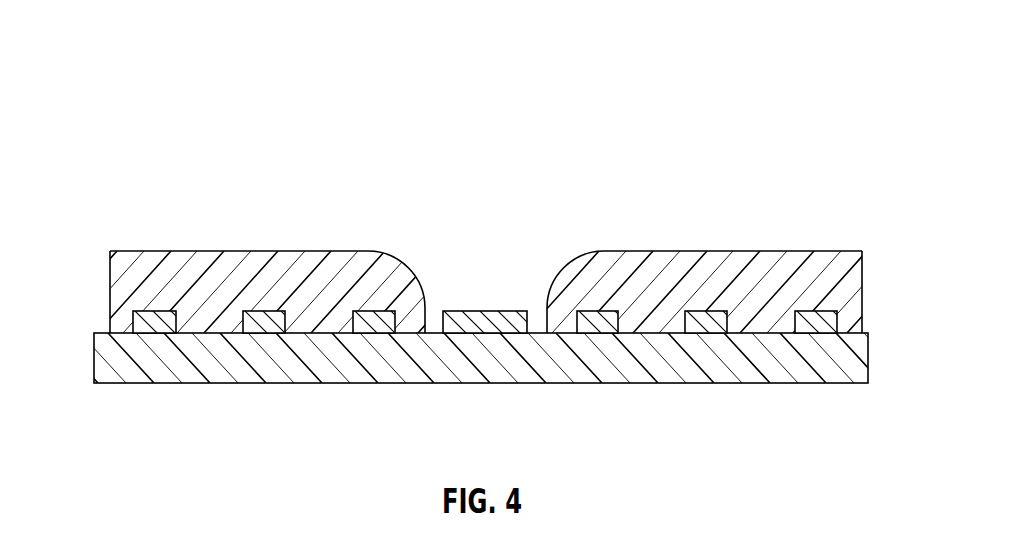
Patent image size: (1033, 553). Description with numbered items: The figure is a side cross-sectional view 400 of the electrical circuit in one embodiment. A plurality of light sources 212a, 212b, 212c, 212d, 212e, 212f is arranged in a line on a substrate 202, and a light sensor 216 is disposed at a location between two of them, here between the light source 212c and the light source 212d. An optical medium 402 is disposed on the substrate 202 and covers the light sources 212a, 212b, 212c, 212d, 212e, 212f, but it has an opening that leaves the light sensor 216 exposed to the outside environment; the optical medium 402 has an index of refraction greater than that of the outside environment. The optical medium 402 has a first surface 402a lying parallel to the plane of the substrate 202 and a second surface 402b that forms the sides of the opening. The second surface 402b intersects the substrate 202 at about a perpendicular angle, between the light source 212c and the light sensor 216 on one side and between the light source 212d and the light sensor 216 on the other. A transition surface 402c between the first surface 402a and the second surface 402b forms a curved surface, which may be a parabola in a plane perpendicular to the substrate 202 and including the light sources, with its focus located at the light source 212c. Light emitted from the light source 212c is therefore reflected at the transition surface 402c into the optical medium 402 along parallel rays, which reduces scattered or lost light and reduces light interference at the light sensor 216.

The side cross-sectional view 400 is at (812, 96).
The optical medium 402 is at (318, 268).
The first surface 402a is at (240, 250).
The second surface 402b is at (547, 292).
The transition surface 402c is at (375, 308).
The substrate 202 is at (858, 363).
The light source 212a is at (135, 323).
The light source 212b is at (263, 333).
The light source 212c is at (367, 333).
The light source 212d is at (602, 333).
The light source 212e is at (707, 333).
The light source 212f is at (827, 333).
The light sensor 216 is at (485, 338).